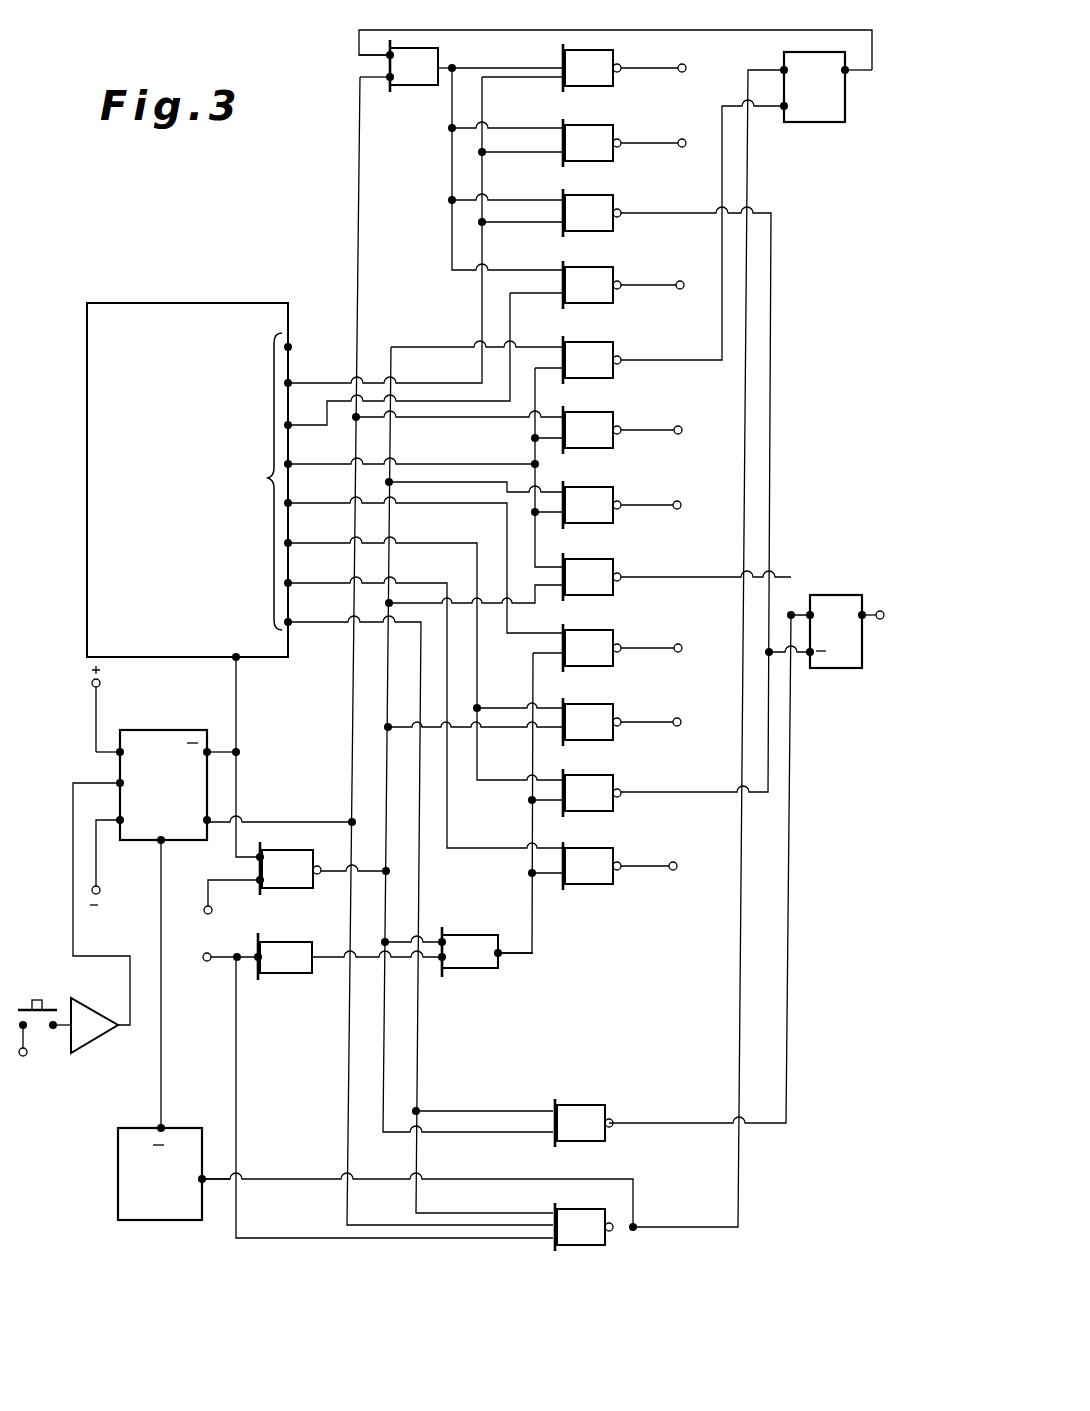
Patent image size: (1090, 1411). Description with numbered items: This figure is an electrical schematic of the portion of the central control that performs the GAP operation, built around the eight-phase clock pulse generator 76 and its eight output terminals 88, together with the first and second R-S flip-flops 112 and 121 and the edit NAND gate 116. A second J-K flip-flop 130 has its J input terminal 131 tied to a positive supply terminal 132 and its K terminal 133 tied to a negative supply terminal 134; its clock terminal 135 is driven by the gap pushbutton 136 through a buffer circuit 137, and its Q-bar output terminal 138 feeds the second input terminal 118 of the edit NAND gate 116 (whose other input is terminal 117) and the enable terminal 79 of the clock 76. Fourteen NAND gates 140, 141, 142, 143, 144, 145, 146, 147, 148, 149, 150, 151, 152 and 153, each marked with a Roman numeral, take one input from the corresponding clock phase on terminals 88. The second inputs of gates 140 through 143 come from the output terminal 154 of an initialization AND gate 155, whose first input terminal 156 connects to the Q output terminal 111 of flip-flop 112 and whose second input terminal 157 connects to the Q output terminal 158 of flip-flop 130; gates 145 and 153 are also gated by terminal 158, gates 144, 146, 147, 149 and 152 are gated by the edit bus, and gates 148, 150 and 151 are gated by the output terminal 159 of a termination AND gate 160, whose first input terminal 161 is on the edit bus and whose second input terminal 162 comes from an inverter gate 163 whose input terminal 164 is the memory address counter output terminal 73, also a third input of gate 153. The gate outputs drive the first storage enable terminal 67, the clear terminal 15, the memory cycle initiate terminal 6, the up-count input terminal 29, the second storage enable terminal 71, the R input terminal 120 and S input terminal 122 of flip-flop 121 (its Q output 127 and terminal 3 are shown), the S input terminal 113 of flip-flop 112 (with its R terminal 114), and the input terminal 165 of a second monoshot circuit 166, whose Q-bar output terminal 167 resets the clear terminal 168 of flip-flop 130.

The output terminal 3 is at (880, 620).
The memory cycle initiate terminal 6 is at (683, 281).
The clear terminal 15 is at (683, 139).
The up-count input terminal 29 is at (681, 426).
The first storage enable terminal 67 is at (685, 65).
The second storage enable terminal 71 is at (680, 501).
The memory address counter output terminal 73 is at (220, 973).
The eight-phase clock pulse generator 76 is at (227, 298).
The enable terminal 79 is at (240, 662).
The output terminals 88 is at (245, 481).
The Q output terminal 111 is at (848, 74).
The first R-S flip-flop 112 is at (828, 103).
The S input terminal 113 is at (784, 70).
The reset input 114 is at (782, 110).
The edit NAND gate 116 is at (326, 838).
The input terminal 117 is at (242, 876).
The second input terminal 118 is at (258, 850).
The R input terminal 120 is at (810, 612).
The second R-S flip-flop 121 is at (850, 647).
The S input terminal 122 is at (808, 656).
The Q output of flip-flop 127 is at (864, 608).
The second J-K flip-flop 130 is at (180, 798).
The J input terminal 131 is at (120, 744).
The positive supply terminal 132 is at (101, 681).
The K terminal 133 is at (114, 825).
The negative supply terminal 134 is at (100, 892).
The clock terminal 135 is at (116, 779).
The gap pushbutton 136 is at (42, 1028).
The buffer circuit 137 is at (88, 1006).
The Q-bar output terminal 138 is at (208, 748).
The NAND gate 140 is at (614, 54).
The NAND gate 141 is at (604, 125).
The NAND gate 142 is at (604, 195).
The NAND gate 143 is at (607, 267).
The NAND gate 144 is at (612, 342).
The NAND gate 145 is at (612, 412).
The NAND gate 146 is at (612, 487).
The NAND gate 147 is at (612, 559).
The NAND gate 148 is at (612, 630).
The NAND gate 149 is at (612, 704).
The NAND gate 150 is at (608, 775).
The NAND gate 151 is at (608, 848).
The NAND gate 152 is at (588, 1105).
The NAND gate 153 is at (580, 1246).
The output terminal 154 is at (440, 52).
The initialization AND gate 155 is at (436, 88).
The first input terminal 156 is at (386, 56).
The second input terminal 157 is at (388, 80).
The Q output terminal 158 is at (210, 816).
The output terminal 159 is at (502, 957).
The termination AND gate 160 is at (476, 970).
The first input terminal 161 is at (436, 924).
The second input terminal 162 is at (440, 980).
The inverter gate 163 is at (292, 975).
The input terminal 164 is at (258, 934).
The input terminal 165 is at (206, 1182).
The second monoshot circuit 166 is at (118, 1188).
The Q-bar output terminal 167 is at (164, 1126).
The clear terminal 168 is at (164, 844).